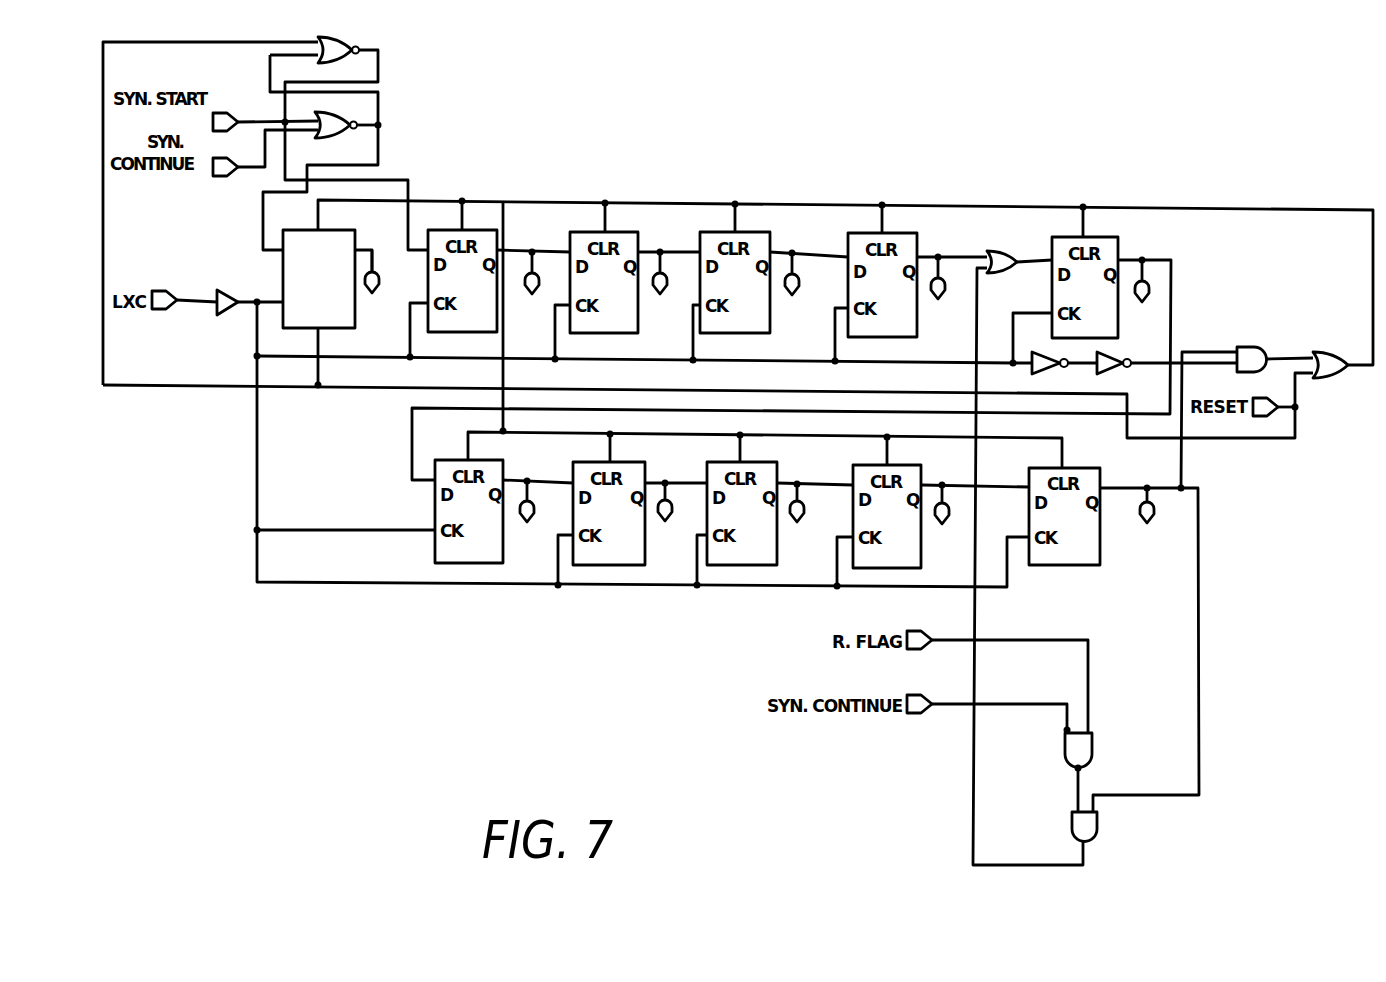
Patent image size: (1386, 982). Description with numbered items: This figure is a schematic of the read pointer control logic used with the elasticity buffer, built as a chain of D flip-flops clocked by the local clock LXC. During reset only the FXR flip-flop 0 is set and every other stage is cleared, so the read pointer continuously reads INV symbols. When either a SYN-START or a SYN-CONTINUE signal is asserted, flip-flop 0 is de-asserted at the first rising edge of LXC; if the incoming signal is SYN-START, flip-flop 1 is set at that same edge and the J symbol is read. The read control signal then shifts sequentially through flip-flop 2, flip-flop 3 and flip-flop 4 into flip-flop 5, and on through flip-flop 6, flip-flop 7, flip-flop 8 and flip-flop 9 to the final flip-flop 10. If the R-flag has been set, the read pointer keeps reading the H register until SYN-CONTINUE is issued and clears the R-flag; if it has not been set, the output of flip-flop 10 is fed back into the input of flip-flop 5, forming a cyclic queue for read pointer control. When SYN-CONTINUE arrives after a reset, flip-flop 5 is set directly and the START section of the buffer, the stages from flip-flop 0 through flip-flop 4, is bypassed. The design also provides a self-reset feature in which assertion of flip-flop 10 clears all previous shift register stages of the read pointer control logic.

The FXR5 flip-flop 5 is at (319, 279).
The FXR0 flip-flop 0 is at (380, 286).
The FXR1 flip-flop 1 is at (531, 287).
The FXR2 flip-flop 2 is at (665, 287).
The FXR3 flip-flop 3 is at (797, 287).
The FXR4 flip-flop 4 is at (942, 291).
The FXR6 flip-flop 6 is at (529, 515).
The FXR7 flip-flop 7 is at (672, 516).
The FXR8 flip-flop 8 is at (804, 517).
The FXR9 flip-flop 9 is at (949, 517).
The FXR10 flip-flop 10 is at (1150, 520).